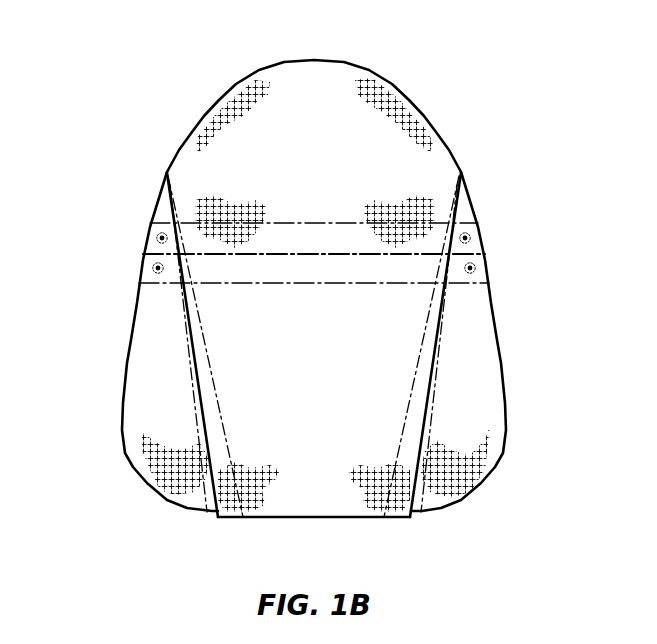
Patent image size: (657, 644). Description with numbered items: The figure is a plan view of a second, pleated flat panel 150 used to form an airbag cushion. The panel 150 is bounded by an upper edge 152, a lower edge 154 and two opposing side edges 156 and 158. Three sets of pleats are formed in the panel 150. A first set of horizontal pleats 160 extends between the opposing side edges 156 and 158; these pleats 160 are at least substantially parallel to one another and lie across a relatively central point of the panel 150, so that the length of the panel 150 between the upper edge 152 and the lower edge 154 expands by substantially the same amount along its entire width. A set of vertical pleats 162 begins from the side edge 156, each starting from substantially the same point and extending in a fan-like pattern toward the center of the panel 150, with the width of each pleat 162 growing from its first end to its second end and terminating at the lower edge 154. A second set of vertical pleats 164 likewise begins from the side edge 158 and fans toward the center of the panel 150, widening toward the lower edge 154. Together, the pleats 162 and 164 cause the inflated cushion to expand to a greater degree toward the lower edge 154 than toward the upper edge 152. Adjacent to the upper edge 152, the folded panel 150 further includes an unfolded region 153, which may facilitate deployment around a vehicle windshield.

The panel 150 is at (475, 115).
The upper edge 152 is at (272, 63).
The unfolded region 153 is at (332, 100).
The lower edge 154 is at (422, 512).
The side edge 156 is at (143, 260).
The side edge 158 is at (483, 248).
The horizontal pleats 160 is at (343, 234).
The vertical pleats 162 is at (186, 344).
The second set of vertical pleats 164 is at (443, 351).